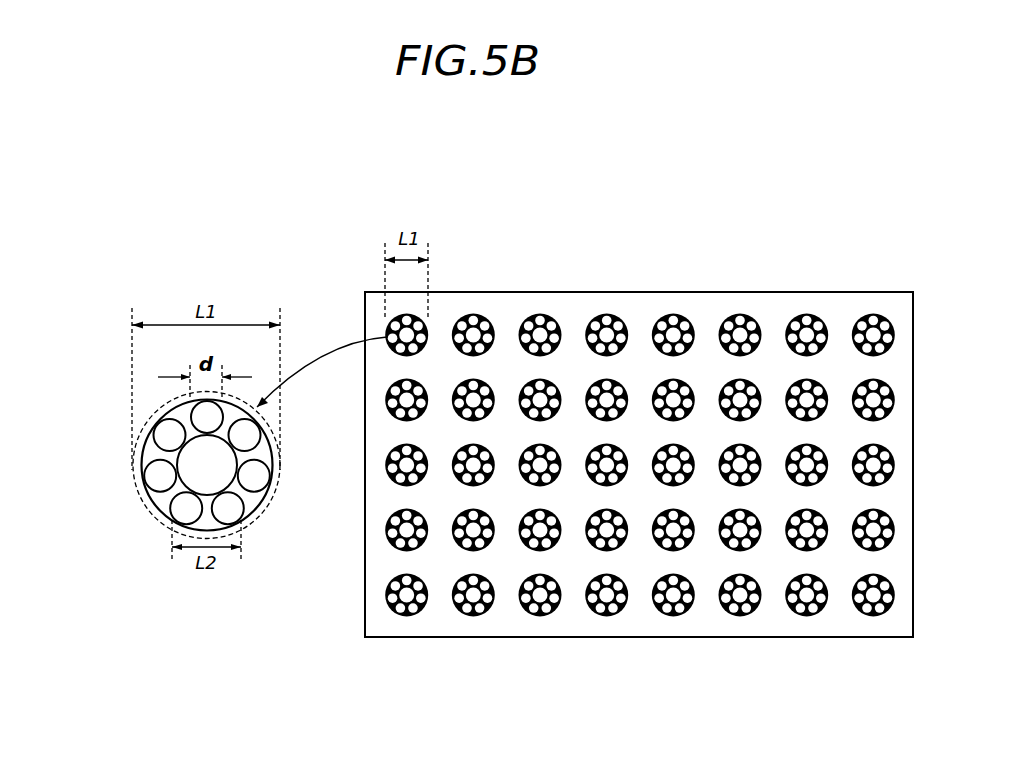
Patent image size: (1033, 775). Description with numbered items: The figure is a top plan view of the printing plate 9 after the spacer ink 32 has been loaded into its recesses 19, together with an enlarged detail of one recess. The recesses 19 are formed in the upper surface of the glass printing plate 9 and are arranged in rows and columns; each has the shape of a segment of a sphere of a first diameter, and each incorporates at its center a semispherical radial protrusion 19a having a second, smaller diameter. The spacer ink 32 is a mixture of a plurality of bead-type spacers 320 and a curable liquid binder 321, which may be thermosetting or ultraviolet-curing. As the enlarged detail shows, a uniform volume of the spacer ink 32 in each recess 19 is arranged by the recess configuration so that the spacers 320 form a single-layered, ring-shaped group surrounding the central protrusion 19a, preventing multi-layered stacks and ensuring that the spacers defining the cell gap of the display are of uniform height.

The printing plate 9 is at (843, 308).
The recess 19 is at (737, 311).
The semispherical radial protrusion 19a is at (177, 454).
The spacer ink 32 is at (207, 543).
The bead-type spacer 320 is at (185, 510).
The liquid binder 321 is at (248, 497).